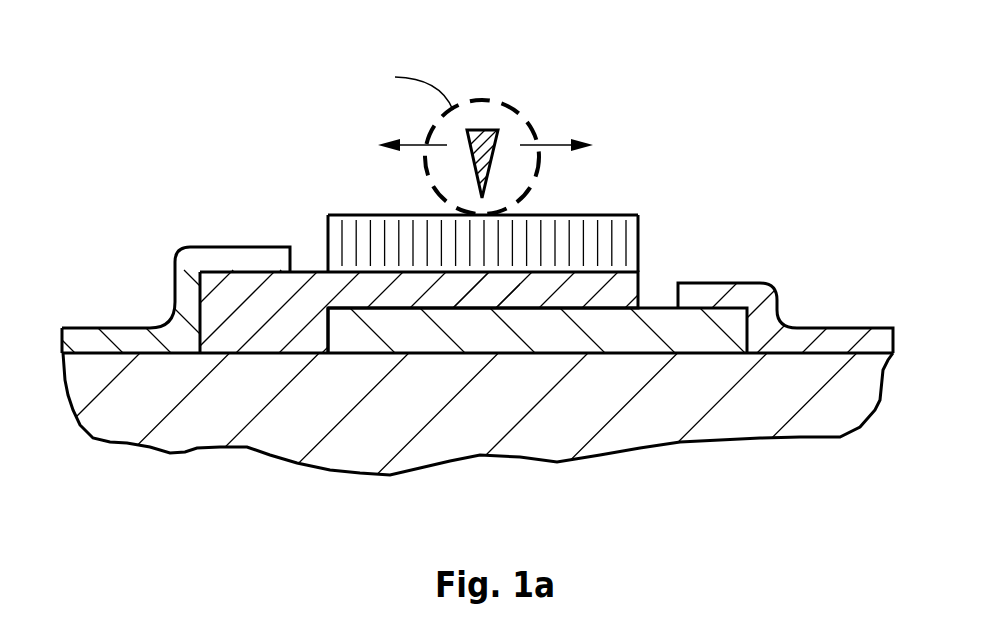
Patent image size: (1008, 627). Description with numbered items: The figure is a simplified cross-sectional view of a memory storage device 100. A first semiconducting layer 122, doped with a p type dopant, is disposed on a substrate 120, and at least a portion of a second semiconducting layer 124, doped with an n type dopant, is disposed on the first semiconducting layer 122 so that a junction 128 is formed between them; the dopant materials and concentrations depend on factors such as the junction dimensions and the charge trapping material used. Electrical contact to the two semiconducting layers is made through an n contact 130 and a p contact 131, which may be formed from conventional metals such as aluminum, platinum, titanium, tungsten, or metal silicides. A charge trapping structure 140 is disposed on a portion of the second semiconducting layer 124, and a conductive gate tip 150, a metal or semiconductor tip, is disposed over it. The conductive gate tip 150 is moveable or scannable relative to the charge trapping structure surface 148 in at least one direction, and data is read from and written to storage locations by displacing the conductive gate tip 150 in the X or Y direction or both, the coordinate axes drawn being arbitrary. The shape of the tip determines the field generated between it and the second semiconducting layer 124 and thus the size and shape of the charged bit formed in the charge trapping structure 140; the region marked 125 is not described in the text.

The memory storage device 100 is at (492, 293).
The substrate 120 is at (748, 420).
The first semiconducting layer 122 is at (710, 332).
The second semiconducting layer 124 is at (308, 296).
The storage region 125 is at (452, 283).
The junction 128 is at (480, 310).
The n contact 130 is at (262, 258).
The p contact 131 is at (727, 290).
The charge trapping structure 140 is at (620, 223).
The charge trapping structure surface 148 is at (388, 215).
The conductive gate tip 150 is at (475, 130).